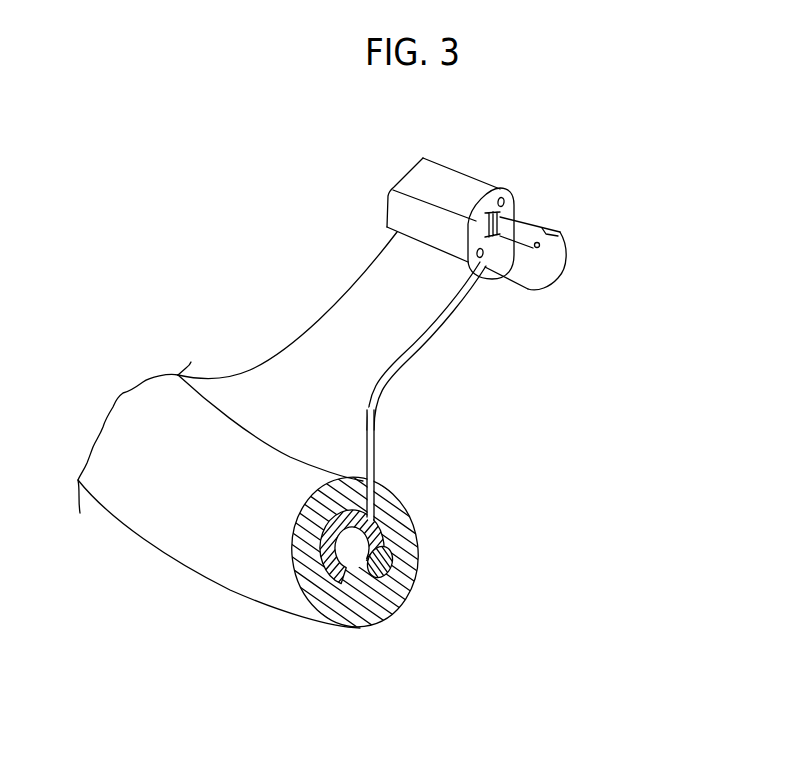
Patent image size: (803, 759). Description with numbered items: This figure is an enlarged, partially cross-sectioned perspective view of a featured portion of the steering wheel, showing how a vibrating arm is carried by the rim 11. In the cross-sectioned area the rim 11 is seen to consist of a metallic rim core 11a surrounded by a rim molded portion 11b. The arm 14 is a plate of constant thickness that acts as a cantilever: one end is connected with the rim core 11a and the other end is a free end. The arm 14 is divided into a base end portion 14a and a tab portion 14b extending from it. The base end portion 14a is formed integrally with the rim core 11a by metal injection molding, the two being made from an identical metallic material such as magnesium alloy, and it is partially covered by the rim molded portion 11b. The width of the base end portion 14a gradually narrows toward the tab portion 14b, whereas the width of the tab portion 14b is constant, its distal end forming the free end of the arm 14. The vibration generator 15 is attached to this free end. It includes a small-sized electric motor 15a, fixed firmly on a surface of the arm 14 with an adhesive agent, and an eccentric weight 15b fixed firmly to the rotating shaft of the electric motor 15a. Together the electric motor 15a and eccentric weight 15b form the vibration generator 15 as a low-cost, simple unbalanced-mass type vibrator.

The rim 11 is at (395, 552).
The rim core 11a is at (383, 557).
The rim molded portion 11b is at (376, 600).
The arm 14 is at (308, 326).
The base end portion 14a is at (340, 442).
The tab portion 14b is at (407, 302).
The vibration generator 15 is at (540, 223).
The electric motor 15a is at (445, 184).
The eccentric weight 15b is at (540, 260).